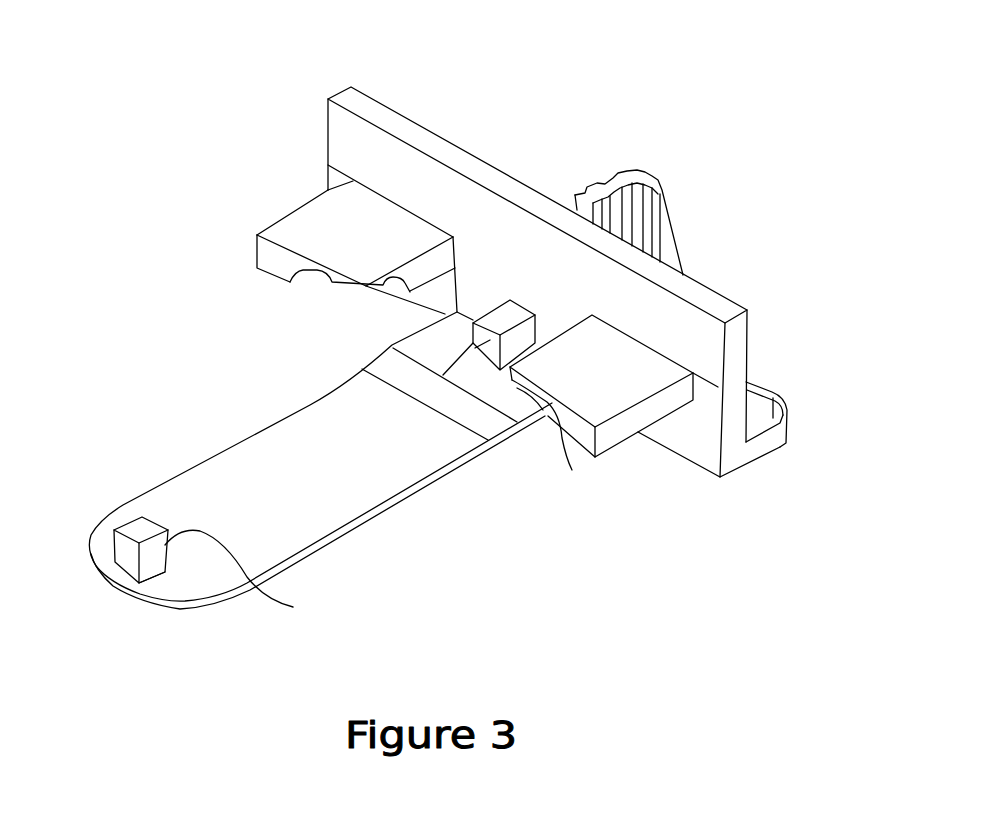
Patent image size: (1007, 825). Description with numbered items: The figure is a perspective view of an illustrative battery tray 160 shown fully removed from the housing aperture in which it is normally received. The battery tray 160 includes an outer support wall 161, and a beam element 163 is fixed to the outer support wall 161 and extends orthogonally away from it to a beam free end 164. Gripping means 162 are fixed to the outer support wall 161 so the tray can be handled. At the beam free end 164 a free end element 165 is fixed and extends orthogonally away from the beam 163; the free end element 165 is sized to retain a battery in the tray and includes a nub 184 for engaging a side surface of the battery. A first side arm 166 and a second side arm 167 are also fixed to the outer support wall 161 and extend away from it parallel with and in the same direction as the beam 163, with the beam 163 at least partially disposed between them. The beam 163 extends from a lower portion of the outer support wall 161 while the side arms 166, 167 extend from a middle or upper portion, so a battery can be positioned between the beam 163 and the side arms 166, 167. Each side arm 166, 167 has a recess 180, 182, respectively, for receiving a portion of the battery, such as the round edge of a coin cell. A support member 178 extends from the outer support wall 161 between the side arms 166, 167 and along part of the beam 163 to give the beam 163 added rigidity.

The battery tray 160 is at (536, 104).
The outer support wall 161 is at (727, 418).
The gripping means 162 is at (618, 172).
The beam element 163 is at (360, 527).
The beam free end 164 is at (123, 582).
The free end element 165 is at (152, 560).
The first side arm 166 is at (317, 230).
The second side arm 167 is at (580, 398).
The support member 178 is at (443, 375).
The recess 180 is at (305, 278).
The recess 182 is at (552, 402).
The nub 184 is at (253, 578).